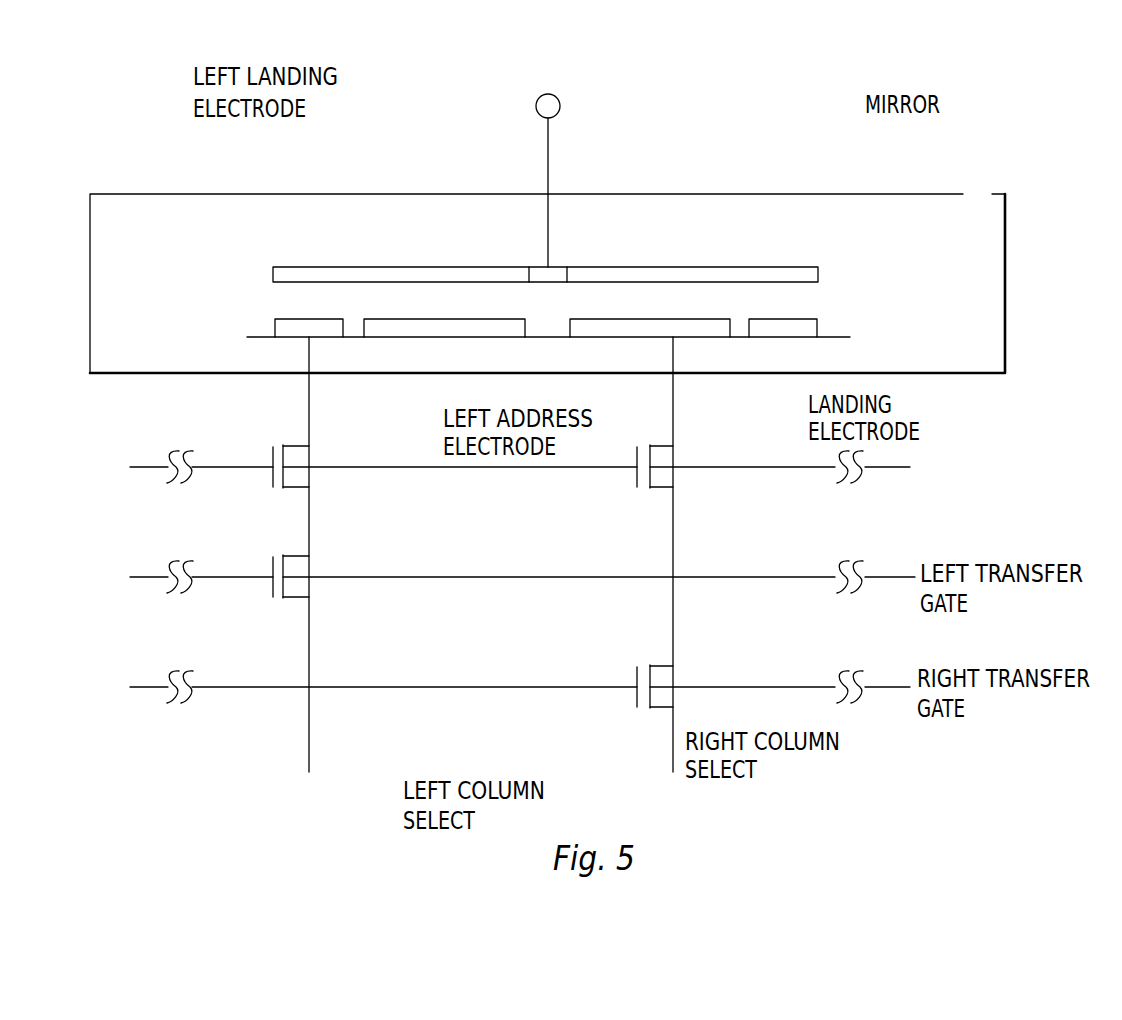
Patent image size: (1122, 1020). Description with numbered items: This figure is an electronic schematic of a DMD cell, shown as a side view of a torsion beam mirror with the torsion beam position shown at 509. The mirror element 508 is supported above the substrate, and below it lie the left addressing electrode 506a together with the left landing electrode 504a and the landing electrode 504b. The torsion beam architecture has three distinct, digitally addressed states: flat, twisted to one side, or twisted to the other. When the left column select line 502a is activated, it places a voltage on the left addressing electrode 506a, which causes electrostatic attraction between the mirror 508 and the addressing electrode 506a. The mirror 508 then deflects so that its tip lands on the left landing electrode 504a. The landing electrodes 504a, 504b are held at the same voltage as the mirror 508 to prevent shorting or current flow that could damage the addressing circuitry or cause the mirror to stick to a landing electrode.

The left landing electrode 504a is at (285, 323).
The landing electrode 504b is at (792, 336).
The left addressing electrode 506a is at (465, 337).
The mirror element 508 is at (772, 268).
The torsion beam position 509 is at (553, 273).
The left column select line 502a is at (310, 743).